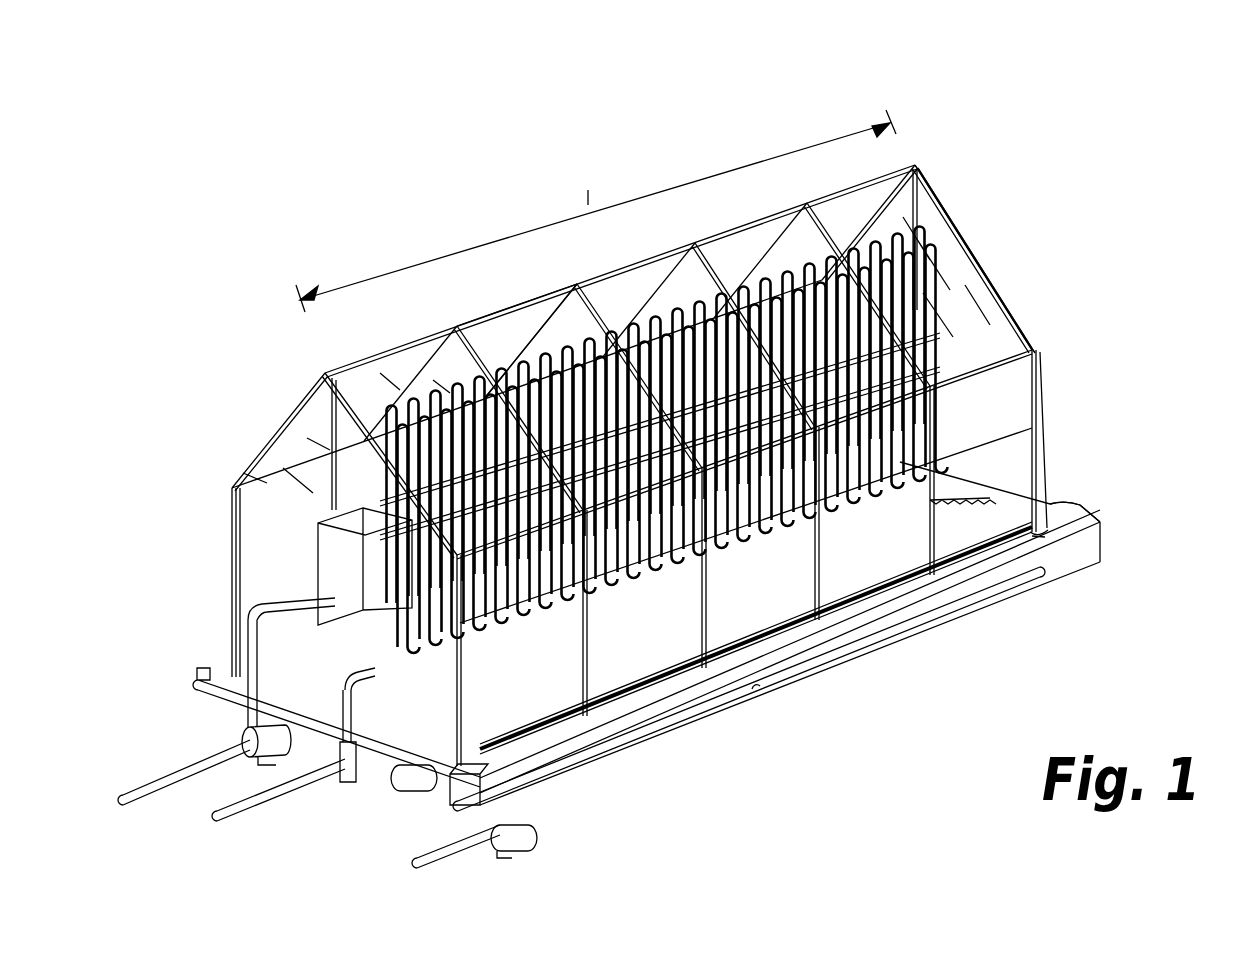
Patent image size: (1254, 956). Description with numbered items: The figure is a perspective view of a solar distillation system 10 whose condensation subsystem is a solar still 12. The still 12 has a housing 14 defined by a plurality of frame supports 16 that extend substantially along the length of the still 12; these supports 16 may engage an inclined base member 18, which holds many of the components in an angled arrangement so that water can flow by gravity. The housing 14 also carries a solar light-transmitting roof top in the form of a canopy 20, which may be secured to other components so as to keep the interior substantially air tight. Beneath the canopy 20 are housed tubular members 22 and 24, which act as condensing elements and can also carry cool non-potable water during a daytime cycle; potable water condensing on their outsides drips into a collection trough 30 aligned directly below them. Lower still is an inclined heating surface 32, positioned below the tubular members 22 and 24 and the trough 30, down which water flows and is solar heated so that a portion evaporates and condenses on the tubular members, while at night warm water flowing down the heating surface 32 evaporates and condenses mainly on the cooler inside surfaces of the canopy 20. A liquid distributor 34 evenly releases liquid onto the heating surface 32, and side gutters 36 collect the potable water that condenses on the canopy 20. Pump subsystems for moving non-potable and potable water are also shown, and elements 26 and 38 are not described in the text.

The distillation system 10 is at (905, 78).
The solar still 12 is at (833, 124).
The housing 14 is at (913, 160).
The frame supports 16 is at (1002, 287).
The inclined base member 18 is at (1065, 582).
The canopy 20 is at (1046, 484).
The tubular member 22 is at (523, 320).
The tubular member 24 is at (577, 284).
The serpentine tube coils 26 is at (664, 440).
The potable water collection trough 30 is at (535, 630).
The inclined heating surface 32 is at (745, 605).
The liquid distributor 34 is at (975, 495).
The side gutters 36 is at (1092, 512).
The pump and piping assembly 38 is at (327, 688).